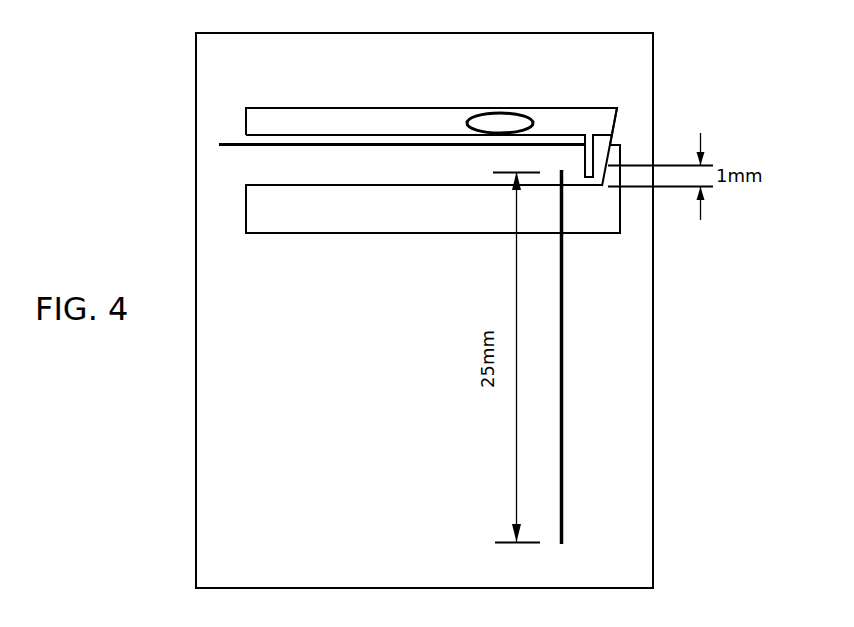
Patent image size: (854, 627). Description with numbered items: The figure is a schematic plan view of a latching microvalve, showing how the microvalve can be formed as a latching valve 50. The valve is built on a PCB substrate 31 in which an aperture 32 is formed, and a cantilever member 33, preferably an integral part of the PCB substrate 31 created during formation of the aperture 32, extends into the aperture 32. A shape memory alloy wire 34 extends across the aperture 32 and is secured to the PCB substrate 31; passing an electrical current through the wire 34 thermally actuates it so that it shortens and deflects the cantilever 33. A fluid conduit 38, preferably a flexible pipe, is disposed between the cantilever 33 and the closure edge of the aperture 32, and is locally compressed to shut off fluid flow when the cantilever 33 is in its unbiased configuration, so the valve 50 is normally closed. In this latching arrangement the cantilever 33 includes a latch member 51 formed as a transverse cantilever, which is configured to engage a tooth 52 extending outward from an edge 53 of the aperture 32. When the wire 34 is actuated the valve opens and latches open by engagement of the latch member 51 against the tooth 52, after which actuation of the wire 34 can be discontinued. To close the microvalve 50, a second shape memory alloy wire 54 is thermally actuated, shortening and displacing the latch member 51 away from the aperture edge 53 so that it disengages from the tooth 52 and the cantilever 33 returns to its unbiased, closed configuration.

The latching valve 50 is at (160, 115).
The PCB substrate 31 is at (388, 456).
The aperture 32 is at (373, 224).
The cantilever member 33 is at (421, 176).
The shape memory alloy wire 34 is at (562, 333).
The fluid conduit 38 is at (477, 114).
The latch member 51 is at (604, 158).
The tooth 52 is at (611, 137).
The edge 53 is at (621, 214).
The second shape memory alloy wire 54 is at (419, 144).